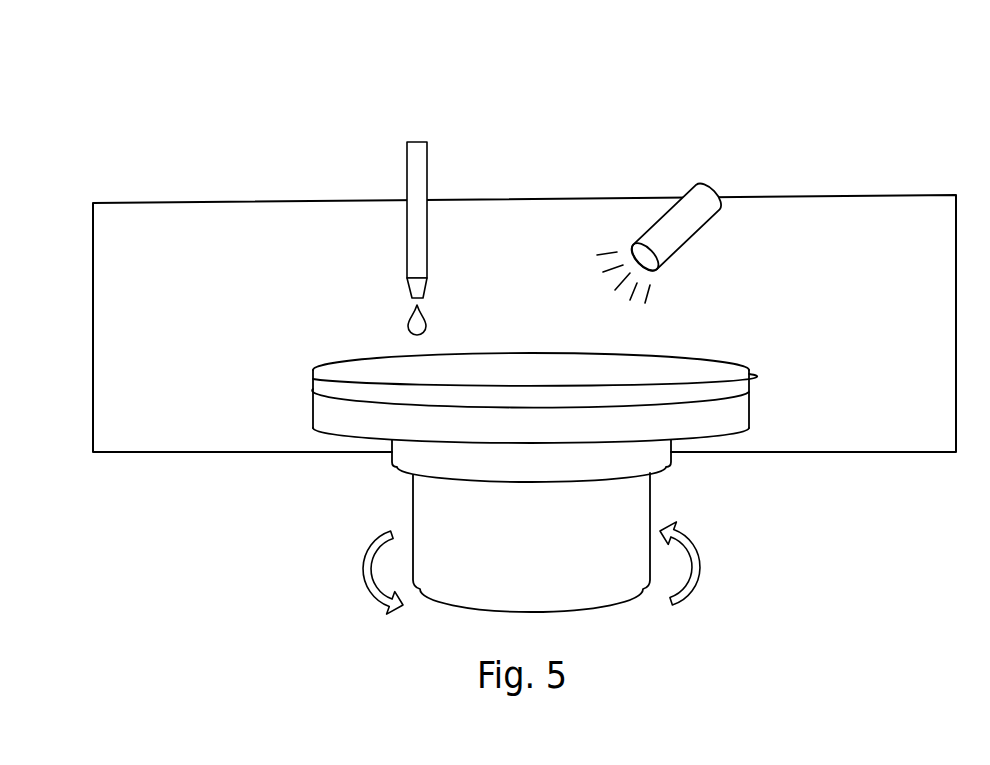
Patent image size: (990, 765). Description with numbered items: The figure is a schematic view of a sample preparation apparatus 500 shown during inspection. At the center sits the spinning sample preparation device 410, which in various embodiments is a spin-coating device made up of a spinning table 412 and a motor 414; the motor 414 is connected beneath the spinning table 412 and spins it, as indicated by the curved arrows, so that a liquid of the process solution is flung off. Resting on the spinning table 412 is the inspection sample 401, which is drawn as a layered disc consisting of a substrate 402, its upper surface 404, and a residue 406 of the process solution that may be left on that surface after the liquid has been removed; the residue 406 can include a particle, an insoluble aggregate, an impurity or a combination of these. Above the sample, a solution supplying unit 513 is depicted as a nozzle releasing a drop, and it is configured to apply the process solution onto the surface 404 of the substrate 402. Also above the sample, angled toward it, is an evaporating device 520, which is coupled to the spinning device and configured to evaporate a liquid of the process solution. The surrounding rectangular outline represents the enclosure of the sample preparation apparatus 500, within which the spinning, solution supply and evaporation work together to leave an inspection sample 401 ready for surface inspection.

The sample preparation apparatus 500 is at (93, 47).
The solution supplying unit 513 is at (428, 168).
The evaporating device 520 is at (665, 200).
The inspection sample 401 is at (427, 384).
The residue 406 is at (313, 379).
The surface 404 is at (313, 389).
The substrate 402 is at (322, 407).
The spinning sample preparation device 410 is at (658, 527).
The spinning table 412 is at (637, 462).
The motor 414 is at (627, 512).